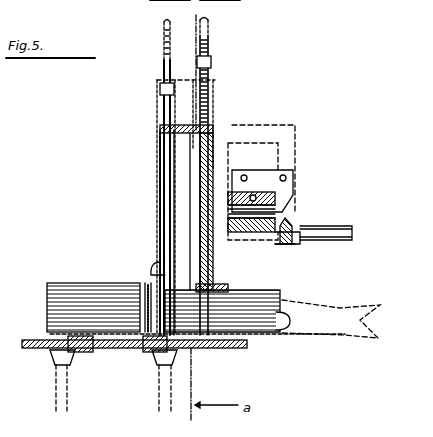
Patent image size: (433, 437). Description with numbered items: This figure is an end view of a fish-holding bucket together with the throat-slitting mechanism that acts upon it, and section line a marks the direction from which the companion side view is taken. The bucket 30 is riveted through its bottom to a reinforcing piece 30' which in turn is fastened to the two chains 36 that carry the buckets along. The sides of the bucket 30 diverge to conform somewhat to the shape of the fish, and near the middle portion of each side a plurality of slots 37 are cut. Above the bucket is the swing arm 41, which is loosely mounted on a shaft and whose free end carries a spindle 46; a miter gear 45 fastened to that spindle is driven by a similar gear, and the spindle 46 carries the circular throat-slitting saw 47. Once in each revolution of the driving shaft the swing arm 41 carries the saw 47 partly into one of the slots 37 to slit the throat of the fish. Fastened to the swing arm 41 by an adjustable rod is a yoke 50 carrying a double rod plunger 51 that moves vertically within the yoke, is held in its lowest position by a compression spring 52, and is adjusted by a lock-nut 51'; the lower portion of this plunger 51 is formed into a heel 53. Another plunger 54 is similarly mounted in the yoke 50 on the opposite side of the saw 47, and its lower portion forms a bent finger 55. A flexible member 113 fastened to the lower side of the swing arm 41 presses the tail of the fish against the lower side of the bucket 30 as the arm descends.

The section line a- a is at (197, 36).
The plunger 54 is at (165, 110).
The double rod plunger 51 is at (229, 177).
The lock-nut 51' is at (231, 57).
The yoke 50 is at (162, 132).
The compression spring 52 is at (214, 142).
The swing arm 41 is at (283, 178).
The spindle 46 is at (316, 240).
The gear 45 is at (296, 240).
The flexible member 113 is at (280, 250).
The heel 53 is at (222, 286).
The bent finger 55 is at (130, 283).
The slots 37 is at (160, 285).
The circular throat-slitting saw 47 is at (160, 262).
The bucket 30 is at (215, 326).
The reinforcing piece 30' is at (134, 358).
The chains 36 is at (72, 360).